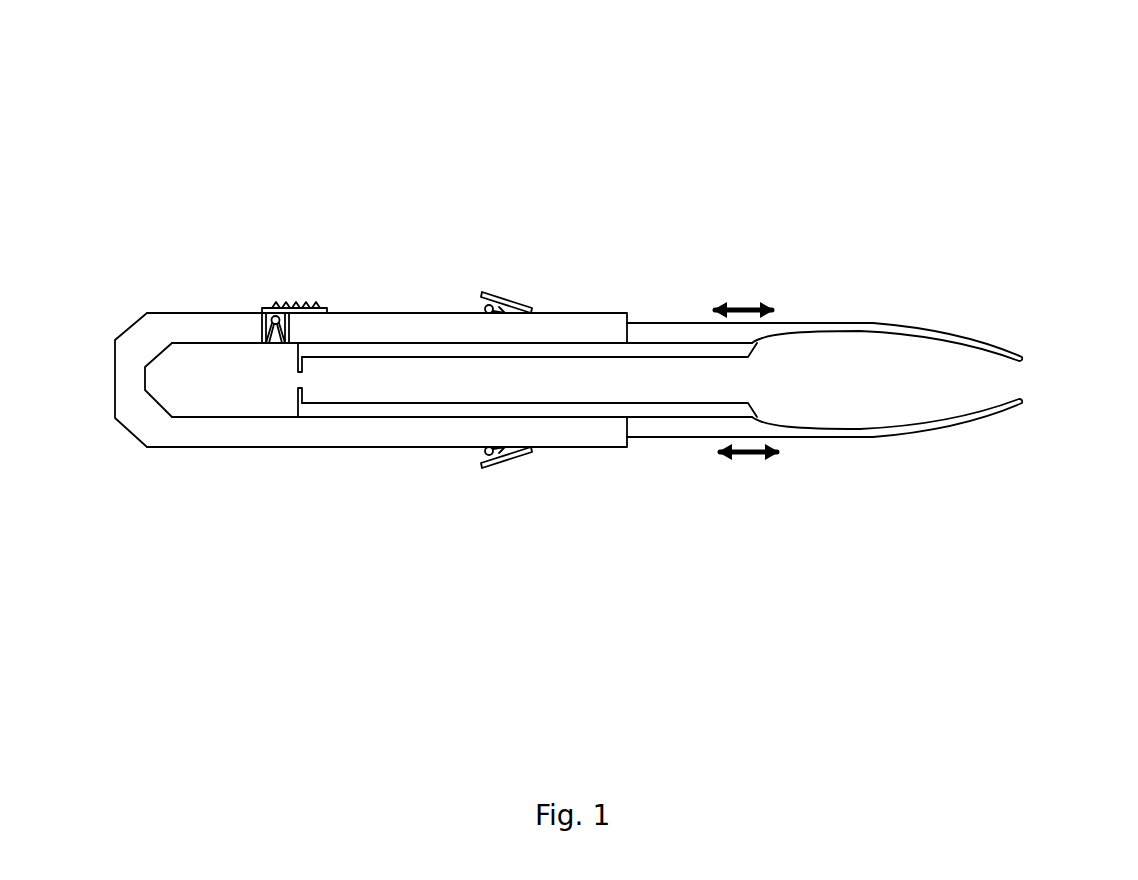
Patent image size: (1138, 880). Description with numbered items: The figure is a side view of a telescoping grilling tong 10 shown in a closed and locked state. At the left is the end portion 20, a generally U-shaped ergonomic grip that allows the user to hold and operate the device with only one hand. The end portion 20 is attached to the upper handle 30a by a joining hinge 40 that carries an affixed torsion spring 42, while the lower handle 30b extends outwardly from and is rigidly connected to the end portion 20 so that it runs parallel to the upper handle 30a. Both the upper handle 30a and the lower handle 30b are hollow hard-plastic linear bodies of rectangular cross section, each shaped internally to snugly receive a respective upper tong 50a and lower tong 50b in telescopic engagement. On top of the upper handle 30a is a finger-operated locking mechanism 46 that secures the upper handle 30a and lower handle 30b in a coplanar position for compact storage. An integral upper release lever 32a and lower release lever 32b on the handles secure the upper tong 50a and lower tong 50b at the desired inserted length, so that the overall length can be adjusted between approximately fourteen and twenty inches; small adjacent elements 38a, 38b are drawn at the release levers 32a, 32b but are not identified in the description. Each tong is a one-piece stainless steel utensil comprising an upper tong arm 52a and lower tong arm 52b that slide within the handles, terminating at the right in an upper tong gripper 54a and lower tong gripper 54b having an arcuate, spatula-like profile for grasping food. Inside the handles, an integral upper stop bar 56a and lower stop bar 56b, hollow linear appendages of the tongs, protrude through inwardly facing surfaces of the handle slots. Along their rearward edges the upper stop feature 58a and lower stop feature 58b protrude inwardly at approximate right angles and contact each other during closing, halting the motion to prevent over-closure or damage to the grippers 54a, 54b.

The telescoping grilling tong 10 is at (103, 114).
The end portion 20 is at (128, 433).
The upper handle 30a is at (408, 313).
The lower handle 30b is at (398, 447).
The finger-operated locking mechanism 46 is at (262, 309).
The joining hinge 40 is at (271, 318).
The torsion spring 42 is at (277, 341).
The upper stop feature 58a is at (305, 366).
The lower stop feature 58b is at (303, 398).
The upper stop bar 56a is at (676, 352).
The lower stop bar 56b is at (670, 410).
The upper tong arm 52a is at (662, 322).
The lower tong arm 52b is at (660, 438).
The upper tong gripper 54a is at (938, 325).
The lower tong gripper 54b is at (903, 438).
The upper tong 50a is at (1010, 331).
The lower tong 50b is at (953, 444).
The upper release lever 32a is at (512, 300).
The lower release lever 32b is at (507, 460).
The upper pivot 38a is at (485, 307).
The lower pivot 38b is at (483, 456).